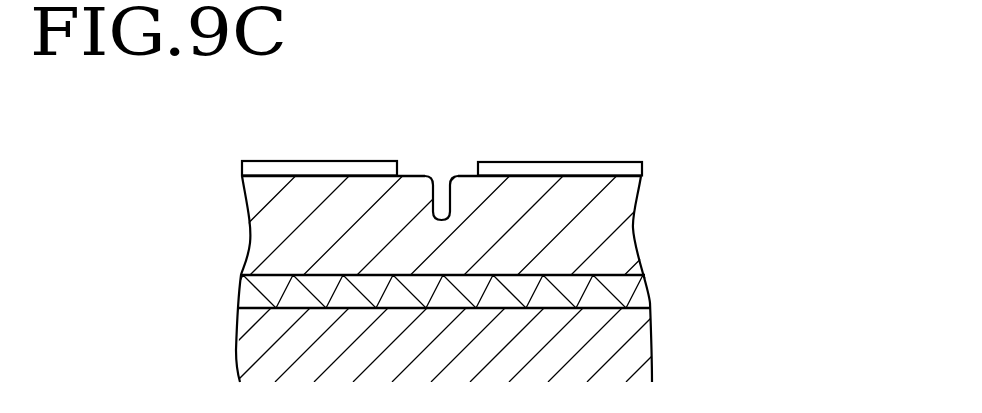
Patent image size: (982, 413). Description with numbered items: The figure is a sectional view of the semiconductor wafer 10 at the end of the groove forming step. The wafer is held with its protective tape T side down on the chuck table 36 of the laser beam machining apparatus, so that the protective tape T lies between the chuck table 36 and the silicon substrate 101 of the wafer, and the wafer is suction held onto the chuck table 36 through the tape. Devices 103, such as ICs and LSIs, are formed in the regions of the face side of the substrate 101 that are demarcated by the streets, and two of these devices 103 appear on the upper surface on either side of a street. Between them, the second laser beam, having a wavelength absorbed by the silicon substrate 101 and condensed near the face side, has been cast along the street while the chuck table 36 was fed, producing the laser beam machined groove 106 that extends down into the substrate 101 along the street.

The semiconductor wafer 10 is at (620, 120).
The substrate 101 is at (417, 168).
The devices 103 is at (315, 160).
The laser beam machined groove 106 is at (440, 176).
The protective tape T is at (650, 297).
The chuck table 36 is at (640, 347).